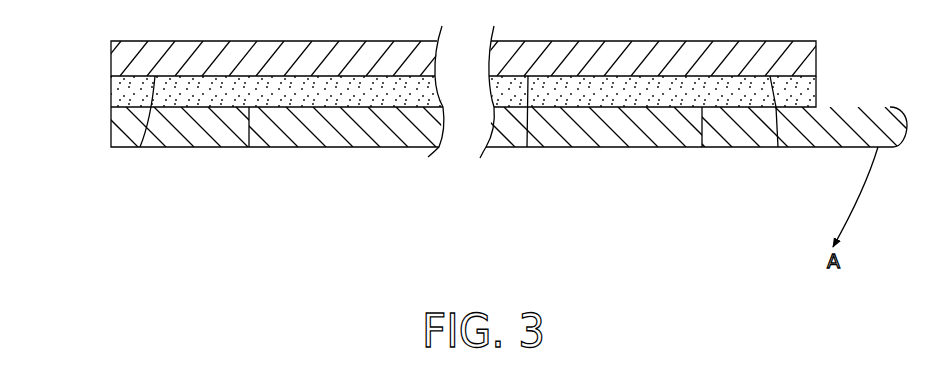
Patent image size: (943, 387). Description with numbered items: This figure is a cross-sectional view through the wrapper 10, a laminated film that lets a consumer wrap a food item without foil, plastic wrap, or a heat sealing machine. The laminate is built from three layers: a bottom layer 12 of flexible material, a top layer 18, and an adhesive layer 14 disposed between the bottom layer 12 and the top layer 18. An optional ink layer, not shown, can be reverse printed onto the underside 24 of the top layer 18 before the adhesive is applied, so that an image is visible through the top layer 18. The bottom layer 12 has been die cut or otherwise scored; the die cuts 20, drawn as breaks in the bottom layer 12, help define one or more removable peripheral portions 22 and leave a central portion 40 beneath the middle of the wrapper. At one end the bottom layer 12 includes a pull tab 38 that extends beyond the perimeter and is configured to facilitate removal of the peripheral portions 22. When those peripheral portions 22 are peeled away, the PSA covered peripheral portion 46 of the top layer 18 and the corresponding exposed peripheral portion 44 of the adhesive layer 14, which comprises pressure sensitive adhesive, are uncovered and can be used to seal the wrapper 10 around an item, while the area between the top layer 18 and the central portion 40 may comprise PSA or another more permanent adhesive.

The wrapper 10 is at (143, 233).
The bottom layer 12 is at (111, 118).
The adhesive layer 14 is at (111, 91).
The top layer 18 is at (111, 63).
The die cuts 20 is at (249, 128).
The peripheral portions 22 is at (235, 147).
The underside 24 is at (527, 147).
The pull tab 38 is at (905, 147).
The central portion 40 is at (398, 148).
The exposed peripheral portion of the adhesive layer 44 is at (200, 96).
The PSA covered peripheral portion 46 is at (140, 147).